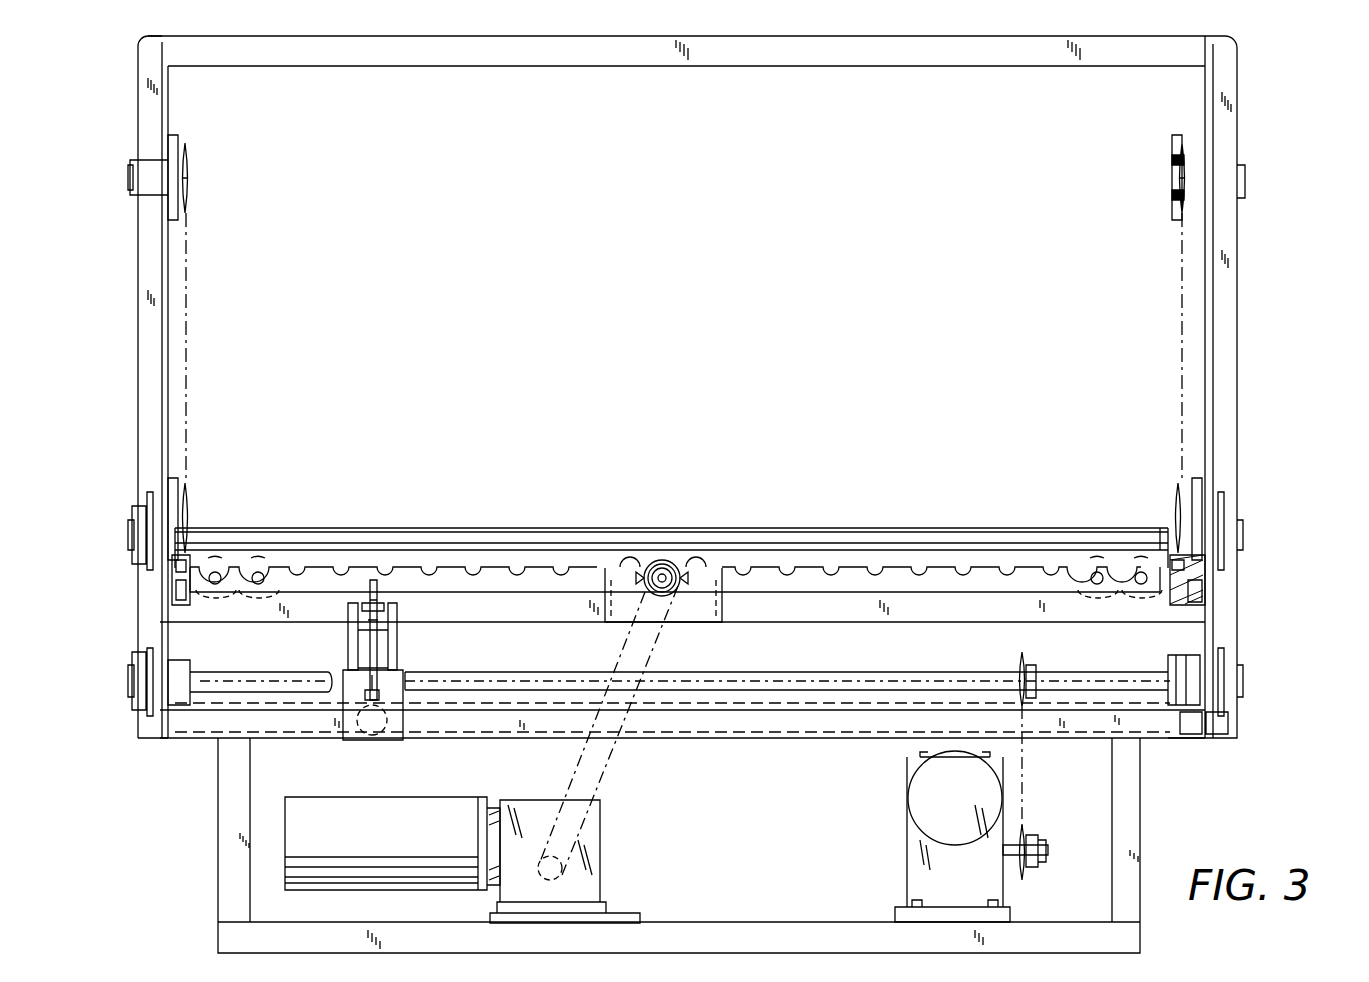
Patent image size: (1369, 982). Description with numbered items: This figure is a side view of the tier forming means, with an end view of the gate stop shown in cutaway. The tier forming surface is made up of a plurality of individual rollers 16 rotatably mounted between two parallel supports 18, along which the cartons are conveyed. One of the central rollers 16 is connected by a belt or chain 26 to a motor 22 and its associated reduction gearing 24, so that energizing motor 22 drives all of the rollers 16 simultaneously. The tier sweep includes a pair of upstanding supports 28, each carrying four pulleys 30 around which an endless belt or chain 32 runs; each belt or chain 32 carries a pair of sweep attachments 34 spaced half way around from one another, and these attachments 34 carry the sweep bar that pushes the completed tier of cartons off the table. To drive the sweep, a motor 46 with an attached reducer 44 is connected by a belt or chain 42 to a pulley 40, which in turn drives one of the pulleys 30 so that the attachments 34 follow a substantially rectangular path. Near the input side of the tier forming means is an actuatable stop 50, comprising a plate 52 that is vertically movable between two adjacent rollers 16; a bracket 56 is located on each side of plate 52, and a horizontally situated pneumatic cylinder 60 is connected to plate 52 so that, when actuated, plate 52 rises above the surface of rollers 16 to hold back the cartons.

The rollers 16 is at (1141, 567).
The supports 18 is at (1230, 296).
The motor 22 is at (392, 843).
The reduction gearing 24 is at (605, 850).
The belt or chain 26 is at (610, 785).
The upstanding supports 28 is at (150, 326).
The pulleys 30 is at (1175, 500).
The endless belt or chain 32 is at (1180, 295).
The sweep attachments 34 is at (1160, 561).
The pulley 40 is at (1053, 682).
The belt or chain 42 is at (1025, 785).
The reducer 44 is at (952, 839).
The motor 46 is at (955, 798).
The actuatable stop 50 is at (390, 576).
The plate 52 is at (372, 580).
The bracket 56 is at (398, 628).
The pneumatic cylinder 60 is at (360, 740).